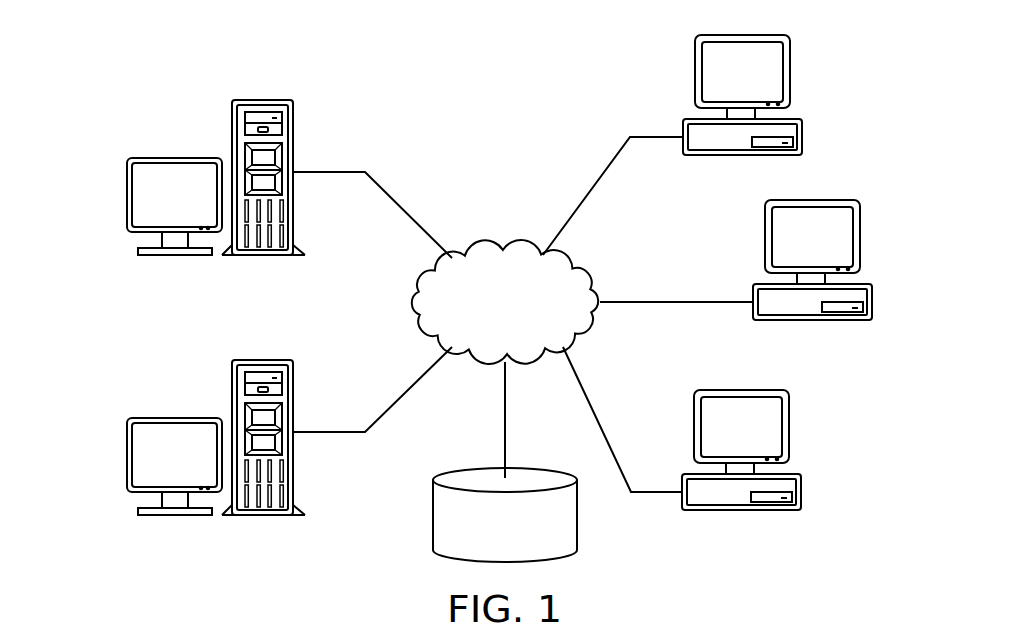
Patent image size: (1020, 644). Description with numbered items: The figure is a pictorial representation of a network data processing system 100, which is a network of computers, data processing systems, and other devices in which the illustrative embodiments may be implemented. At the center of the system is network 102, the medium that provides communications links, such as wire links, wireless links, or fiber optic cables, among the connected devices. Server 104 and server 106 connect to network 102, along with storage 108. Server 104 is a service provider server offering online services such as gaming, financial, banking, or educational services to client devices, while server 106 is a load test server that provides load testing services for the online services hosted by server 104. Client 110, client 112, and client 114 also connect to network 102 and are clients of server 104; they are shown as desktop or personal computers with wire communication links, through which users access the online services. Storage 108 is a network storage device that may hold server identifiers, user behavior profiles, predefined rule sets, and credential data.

The network data processing system 100 is at (372, 83).
The network 102 is at (480, 248).
The server 104 is at (127, 197).
The server 106 is at (127, 455).
The storage 108 is at (433, 513).
The client 110 is at (803, 127).
The client 112 is at (873, 310).
The client 114 is at (803, 498).